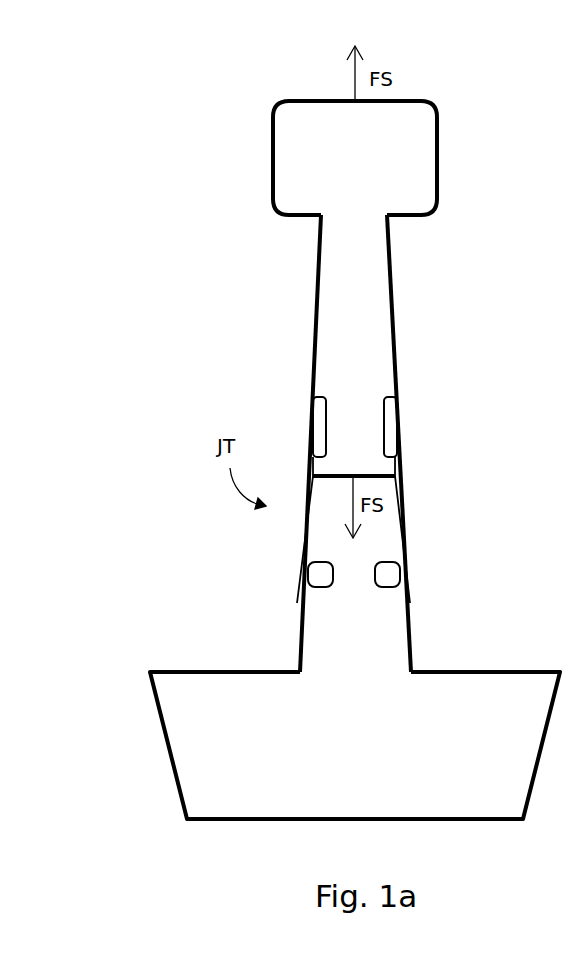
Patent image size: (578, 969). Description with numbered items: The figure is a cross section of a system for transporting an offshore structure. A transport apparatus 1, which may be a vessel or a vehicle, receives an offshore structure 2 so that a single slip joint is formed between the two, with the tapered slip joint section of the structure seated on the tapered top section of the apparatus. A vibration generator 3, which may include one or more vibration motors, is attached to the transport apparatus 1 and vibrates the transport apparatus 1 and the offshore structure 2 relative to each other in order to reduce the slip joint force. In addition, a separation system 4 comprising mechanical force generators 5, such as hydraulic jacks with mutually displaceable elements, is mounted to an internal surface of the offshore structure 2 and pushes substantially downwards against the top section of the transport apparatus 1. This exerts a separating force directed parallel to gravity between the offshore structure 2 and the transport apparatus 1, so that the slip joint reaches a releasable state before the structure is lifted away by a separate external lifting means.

The transport apparatus 1 is at (208, 734).
The offshore structure 2 is at (323, 120).
The vibration generator 3 is at (308, 575).
The separation system 4 is at (291, 382).
The mechanical force generators 5 is at (312, 427).